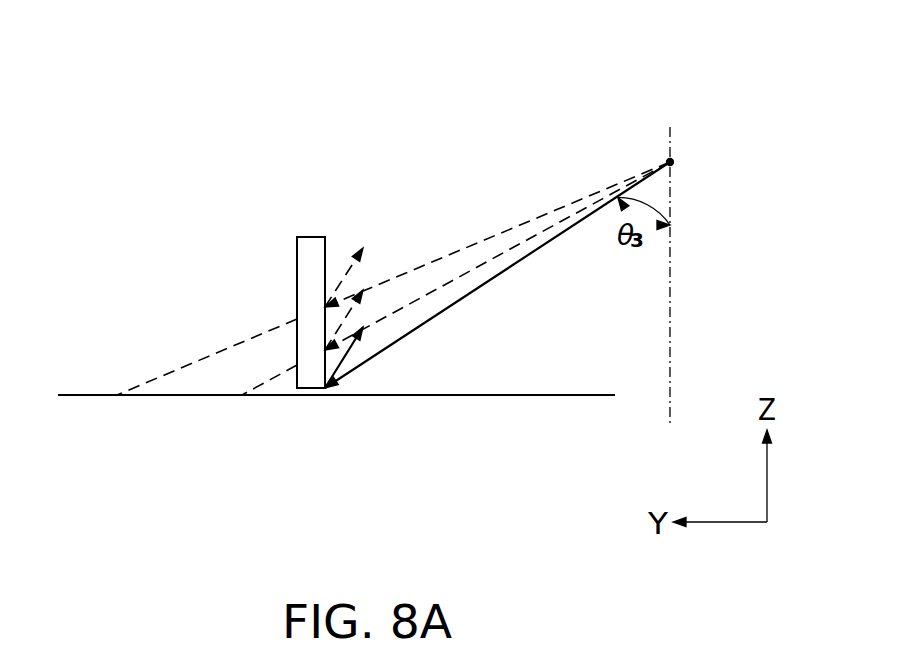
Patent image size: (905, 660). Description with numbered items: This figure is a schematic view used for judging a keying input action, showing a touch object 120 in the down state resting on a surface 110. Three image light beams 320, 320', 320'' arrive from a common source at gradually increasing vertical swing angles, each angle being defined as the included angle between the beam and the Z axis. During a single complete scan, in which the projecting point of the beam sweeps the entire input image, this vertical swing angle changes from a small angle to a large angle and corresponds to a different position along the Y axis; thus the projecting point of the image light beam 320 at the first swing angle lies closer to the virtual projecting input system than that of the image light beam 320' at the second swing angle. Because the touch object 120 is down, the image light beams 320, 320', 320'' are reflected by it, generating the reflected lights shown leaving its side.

The substrate 110 is at (497, 395).
The touch object 120 is at (314, 247).
The image light beam 320 is at (497, 275).
The image light beam 320' is at (456, 278).
The image light beam 320'' is at (393, 278).